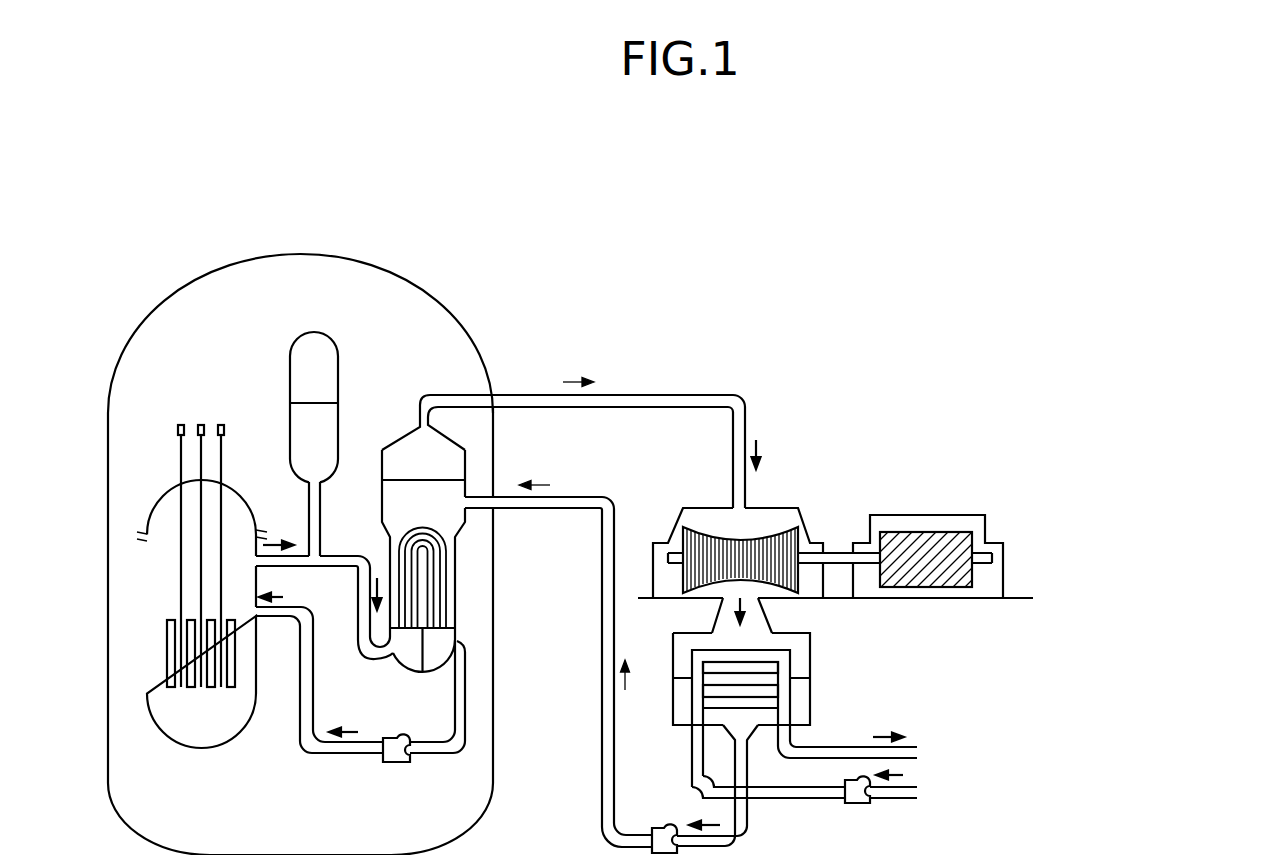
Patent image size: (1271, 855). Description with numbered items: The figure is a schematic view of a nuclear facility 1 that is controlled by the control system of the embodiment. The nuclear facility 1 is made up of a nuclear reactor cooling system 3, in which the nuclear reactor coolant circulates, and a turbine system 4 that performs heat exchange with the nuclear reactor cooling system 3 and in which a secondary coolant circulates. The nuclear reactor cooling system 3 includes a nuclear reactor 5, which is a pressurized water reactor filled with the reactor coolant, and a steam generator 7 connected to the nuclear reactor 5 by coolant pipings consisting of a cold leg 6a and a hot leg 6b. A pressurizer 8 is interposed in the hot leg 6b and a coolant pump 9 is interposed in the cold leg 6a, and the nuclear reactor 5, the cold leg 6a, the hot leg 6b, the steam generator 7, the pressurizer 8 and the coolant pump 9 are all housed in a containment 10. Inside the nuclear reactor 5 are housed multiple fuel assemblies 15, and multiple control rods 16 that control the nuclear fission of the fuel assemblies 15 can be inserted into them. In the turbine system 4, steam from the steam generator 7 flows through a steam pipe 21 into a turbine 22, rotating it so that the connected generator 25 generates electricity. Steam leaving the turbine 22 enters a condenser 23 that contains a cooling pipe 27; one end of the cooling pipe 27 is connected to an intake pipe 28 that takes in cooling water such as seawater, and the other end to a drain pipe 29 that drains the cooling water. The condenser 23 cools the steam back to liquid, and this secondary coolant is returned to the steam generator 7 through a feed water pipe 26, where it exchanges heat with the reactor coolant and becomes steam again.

The nuclear facility 1 is at (96, 144).
The nuclear reactor cooling system 3 is at (130, 377).
The turbine system 4 is at (827, 376).
The nuclear reactor 5 is at (140, 495).
The cold leg 6a is at (326, 755).
The hot leg 6b is at (348, 553).
The steam generator 7 is at (400, 422).
The pressurizer 8 is at (290, 366).
The coolant pump 9 is at (397, 765).
The containment 10 is at (190, 271).
The fuel assemblies 15 is at (207, 688).
The control rods 16 is at (203, 447).
The steam pipe 21 is at (729, 393).
The turbine 22 is at (814, 492).
The condenser 23 is at (831, 660).
The generator 25 is at (1001, 504).
The feed water pipe 26 is at (599, 821).
The cooling pipe 27 is at (692, 660).
The intake pipe 28 is at (790, 800).
The drain pipe 29 is at (831, 746).